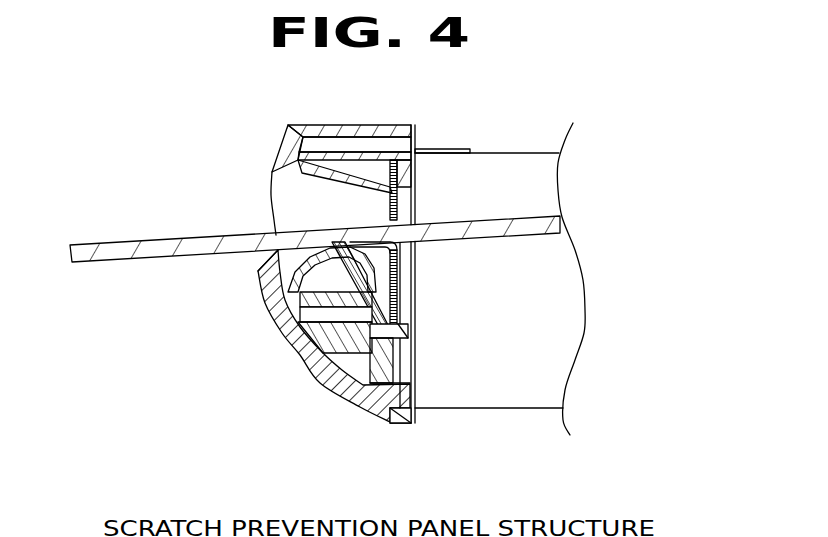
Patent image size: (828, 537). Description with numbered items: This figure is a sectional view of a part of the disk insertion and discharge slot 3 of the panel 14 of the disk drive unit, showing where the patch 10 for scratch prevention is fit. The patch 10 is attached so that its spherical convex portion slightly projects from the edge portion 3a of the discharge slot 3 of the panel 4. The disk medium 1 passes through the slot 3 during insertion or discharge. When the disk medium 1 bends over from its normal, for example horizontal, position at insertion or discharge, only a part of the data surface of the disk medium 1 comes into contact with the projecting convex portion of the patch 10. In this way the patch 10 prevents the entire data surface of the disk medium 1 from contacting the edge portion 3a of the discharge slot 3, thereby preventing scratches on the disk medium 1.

The disk medium 1 is at (123, 259).
The disk insertion and discharge slot 3 is at (280, 214).
The edge portion of the discharge slot 3a is at (250, 268).
The panel 4 is at (399, 210).
The patch for scratch prevention 10 is at (412, 303).
The panel 14 is at (318, 384).